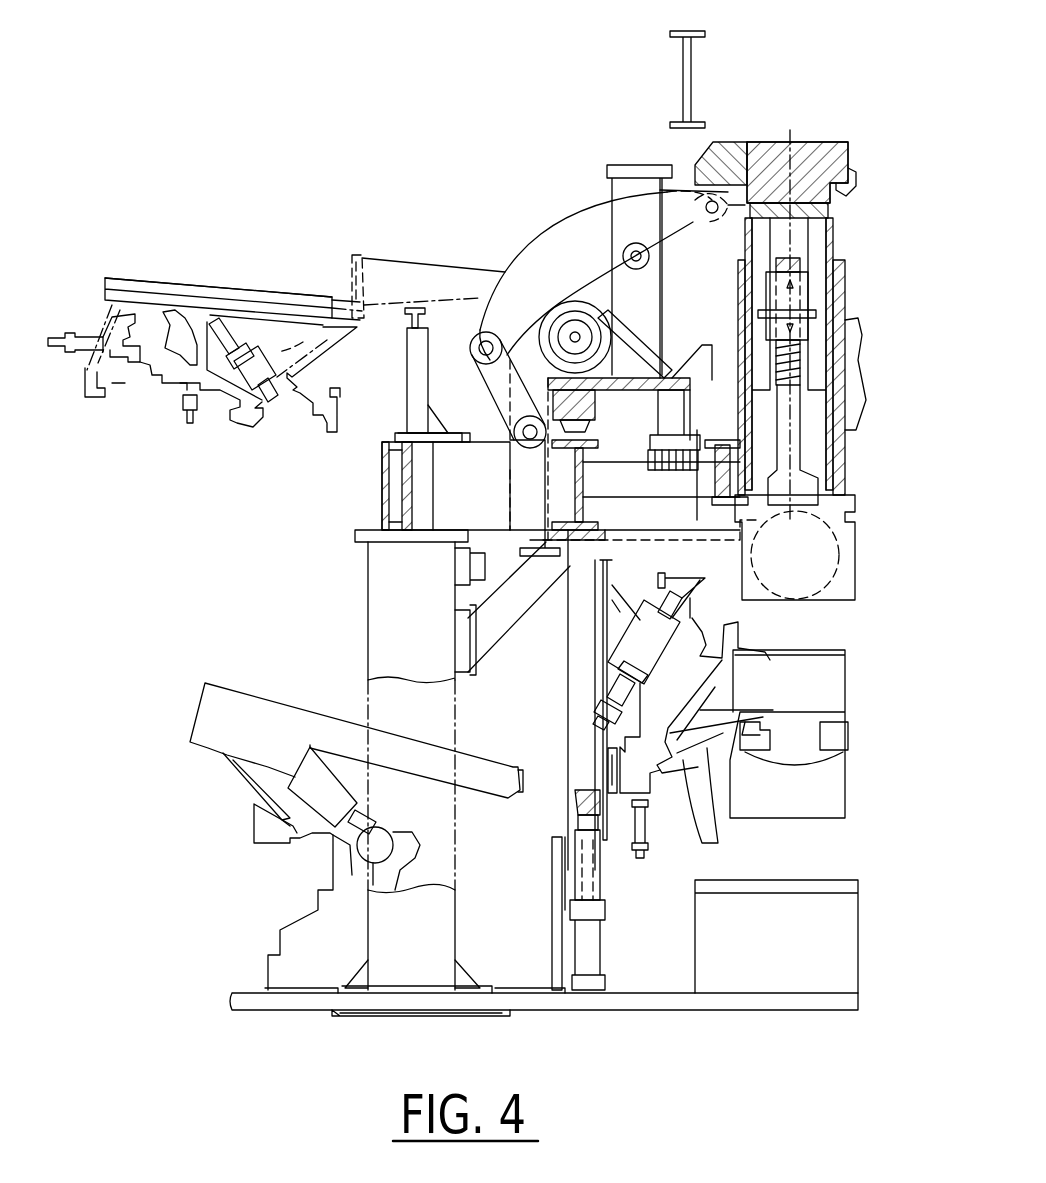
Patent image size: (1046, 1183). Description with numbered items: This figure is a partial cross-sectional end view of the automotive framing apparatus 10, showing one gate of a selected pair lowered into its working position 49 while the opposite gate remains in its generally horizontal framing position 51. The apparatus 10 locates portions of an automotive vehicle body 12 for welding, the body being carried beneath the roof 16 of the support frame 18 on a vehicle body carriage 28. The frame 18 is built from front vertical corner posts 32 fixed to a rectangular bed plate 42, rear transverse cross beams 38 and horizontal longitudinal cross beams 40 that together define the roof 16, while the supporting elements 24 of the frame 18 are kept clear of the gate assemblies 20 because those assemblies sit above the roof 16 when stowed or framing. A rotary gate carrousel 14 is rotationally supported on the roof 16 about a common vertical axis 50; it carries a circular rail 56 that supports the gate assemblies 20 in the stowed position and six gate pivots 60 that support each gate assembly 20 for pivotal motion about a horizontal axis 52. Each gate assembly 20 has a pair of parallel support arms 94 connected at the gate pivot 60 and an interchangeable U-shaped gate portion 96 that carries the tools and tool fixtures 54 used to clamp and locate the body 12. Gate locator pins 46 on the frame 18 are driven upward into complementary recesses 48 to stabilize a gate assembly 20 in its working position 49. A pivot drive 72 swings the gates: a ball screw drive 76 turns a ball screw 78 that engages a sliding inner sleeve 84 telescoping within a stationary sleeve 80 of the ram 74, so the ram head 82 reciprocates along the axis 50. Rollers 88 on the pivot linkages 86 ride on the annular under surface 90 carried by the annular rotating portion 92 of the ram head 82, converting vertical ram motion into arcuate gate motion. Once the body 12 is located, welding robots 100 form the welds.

The automotive framing apparatus 10 is at (800, 42).
The automotive vehicle body 12 is at (800, 735).
The rotary gate carrousel 14 is at (580, 222).
The roof 16 is at (440, 487).
The support frame 18 is at (390, 574).
The gate assembly 20 is at (255, 991).
The supporting elements 24 is at (376, 625).
The vehicle body carriage 28 is at (795, 885).
The front vertical corner posts 32 is at (448, 932).
The rear transverse cross beams 38 is at (445, 462).
The horizontal longitudinal cross beams 40 is at (580, 482).
The rectangular bed plate 42 is at (645, 1005).
The gate locator pins 46 is at (580, 810).
The complementary recesses 48 is at (575, 795).
The working position 49 is at (555, 690).
The common vertical rotational axis 50 is at (795, 150).
The framing position 51 is at (147, 268).
The horizontal axis 52 is at (575, 337).
The tools and tool fixtures 54 is at (150, 352).
The circular rail 56 is at (405, 322).
The gate pivot 60 is at (600, 330).
The pivot drive 72 is at (820, 575).
The ram 74 is at (800, 160).
The ball screw drive 76 is at (800, 412).
The ball screw 78 is at (810, 278).
The stationary sleeve 80 is at (835, 360).
The ram head 82 is at (768, 160).
The sliding inner sleeve 84 is at (835, 235).
The pivot linkage 86 is at (600, 250).
The roller 88 is at (720, 215).
The annular under surface 90 is at (852, 192).
The annular rotating portion 92 is at (718, 158).
The parallel support arms 94 is at (530, 462).
The U-shaped gate portion 96 is at (188, 302).
The welding robots 100 is at (252, 743).